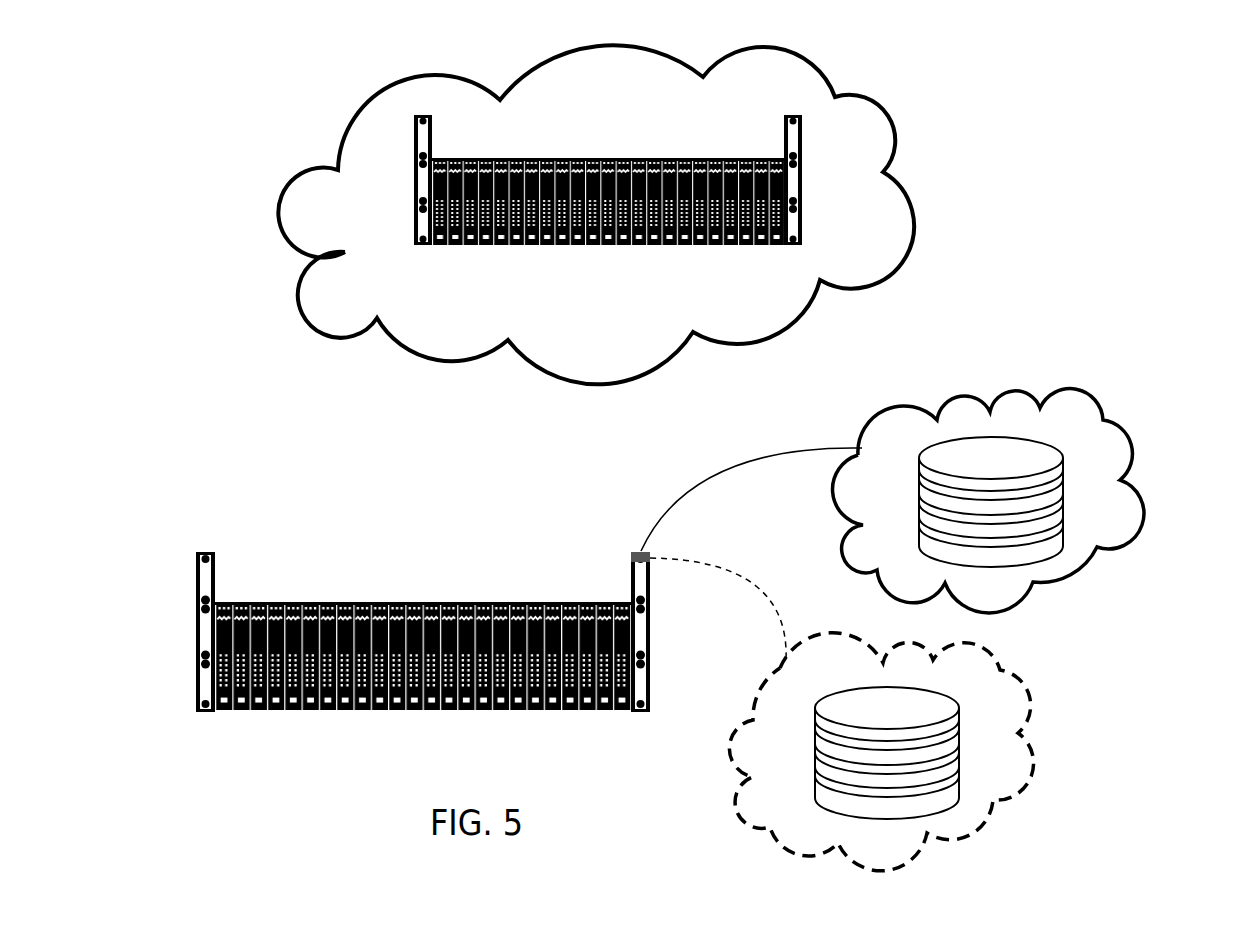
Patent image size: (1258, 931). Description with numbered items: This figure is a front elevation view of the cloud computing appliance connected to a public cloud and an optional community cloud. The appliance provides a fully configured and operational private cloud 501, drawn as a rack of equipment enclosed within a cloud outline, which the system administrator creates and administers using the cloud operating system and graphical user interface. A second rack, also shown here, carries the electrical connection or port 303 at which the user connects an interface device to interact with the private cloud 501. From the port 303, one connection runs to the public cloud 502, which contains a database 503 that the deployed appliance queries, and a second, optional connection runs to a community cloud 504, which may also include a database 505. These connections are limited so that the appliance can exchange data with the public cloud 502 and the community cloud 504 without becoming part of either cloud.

The private cloud 501 is at (865, 93).
The port 303 is at (648, 562).
The public cloud 502 is at (1107, 413).
The database 503 is at (1048, 513).
The community cloud 504 is at (1005, 669).
The database 505 is at (947, 770).